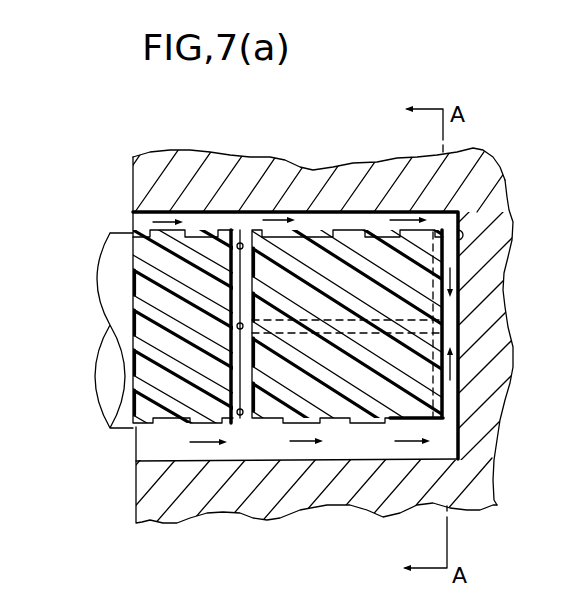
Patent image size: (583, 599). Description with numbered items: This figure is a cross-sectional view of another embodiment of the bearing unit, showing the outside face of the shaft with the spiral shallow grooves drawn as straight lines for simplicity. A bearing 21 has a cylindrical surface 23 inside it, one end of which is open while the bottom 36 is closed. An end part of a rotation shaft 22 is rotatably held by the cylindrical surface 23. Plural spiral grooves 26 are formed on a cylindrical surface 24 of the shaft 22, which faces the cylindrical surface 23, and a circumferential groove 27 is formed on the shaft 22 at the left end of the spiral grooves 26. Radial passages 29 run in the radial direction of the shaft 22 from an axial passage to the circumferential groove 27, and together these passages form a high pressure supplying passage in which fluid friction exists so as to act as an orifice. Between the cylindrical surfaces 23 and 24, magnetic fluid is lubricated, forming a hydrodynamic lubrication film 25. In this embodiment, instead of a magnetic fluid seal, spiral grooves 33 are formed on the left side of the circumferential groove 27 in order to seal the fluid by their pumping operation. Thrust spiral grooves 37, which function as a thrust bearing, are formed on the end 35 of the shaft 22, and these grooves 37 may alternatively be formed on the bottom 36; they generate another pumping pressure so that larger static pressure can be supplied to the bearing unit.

The bearing 21 is at (140, 190).
The rotation shaft 22 is at (110, 260).
The cylindrical surface 23 is at (310, 212).
The cylindrical surface 24 is at (379, 212).
The hydrodynamic lubrication film 25 is at (372, 450).
The spiral grooves 26 is at (380, 355).
The circumferential groove 27 is at (232, 252).
The radial passages 29 is at (237, 326).
The spiral grooves 33 is at (175, 388).
The end of the shaft 35 is at (447, 420).
The bottom 36 is at (458, 237).
The thrust spiral grooves 37 is at (450, 384).